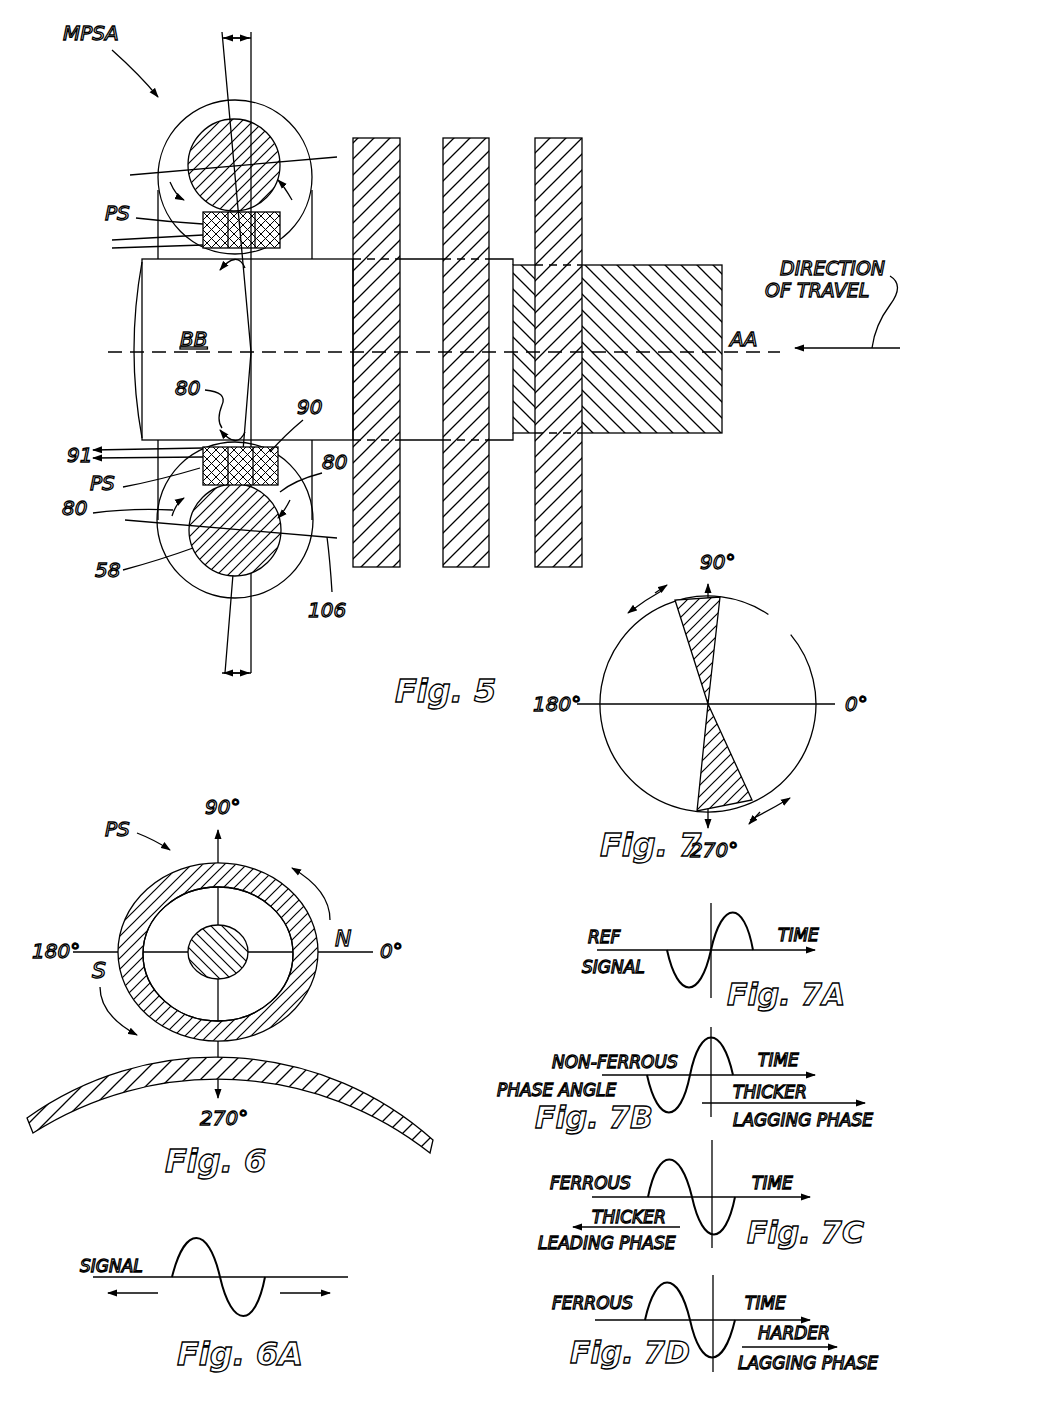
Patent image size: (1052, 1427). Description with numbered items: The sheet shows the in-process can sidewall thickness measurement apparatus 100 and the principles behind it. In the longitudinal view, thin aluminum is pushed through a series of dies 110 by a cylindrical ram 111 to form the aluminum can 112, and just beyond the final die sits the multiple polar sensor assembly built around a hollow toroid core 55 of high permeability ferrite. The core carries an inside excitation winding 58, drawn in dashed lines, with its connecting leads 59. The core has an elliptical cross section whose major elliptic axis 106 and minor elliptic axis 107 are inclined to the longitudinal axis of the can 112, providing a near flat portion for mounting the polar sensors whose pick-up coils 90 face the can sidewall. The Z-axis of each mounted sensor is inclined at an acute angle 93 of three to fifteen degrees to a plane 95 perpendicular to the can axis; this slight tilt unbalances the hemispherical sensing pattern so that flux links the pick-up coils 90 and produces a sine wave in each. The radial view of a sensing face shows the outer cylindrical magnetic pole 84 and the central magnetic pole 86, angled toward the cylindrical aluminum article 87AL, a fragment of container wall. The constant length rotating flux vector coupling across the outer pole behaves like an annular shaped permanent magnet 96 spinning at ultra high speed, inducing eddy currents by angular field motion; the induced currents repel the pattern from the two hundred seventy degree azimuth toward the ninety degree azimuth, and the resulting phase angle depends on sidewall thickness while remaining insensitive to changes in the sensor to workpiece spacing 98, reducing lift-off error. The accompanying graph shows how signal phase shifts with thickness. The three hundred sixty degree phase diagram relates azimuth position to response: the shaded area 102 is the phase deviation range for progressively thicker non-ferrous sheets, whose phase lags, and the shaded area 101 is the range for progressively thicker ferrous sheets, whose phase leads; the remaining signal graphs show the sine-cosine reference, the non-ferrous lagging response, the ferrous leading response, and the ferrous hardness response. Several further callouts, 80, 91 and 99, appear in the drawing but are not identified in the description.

In FIG. 5, the hollow toroid core 55 is at (285, 112).
In FIG. 5, the inside excitation winding 58 is at (192, 147).
In FIG. 5, the connecting leads 59 is at (227, 545).
In FIG. 5, the rotation direction arrows 80 is at (173, 190).
In FIG. 6, the outer cylindrical magnetic pole 84 is at (313, 982).
In FIG. 6, the central magnetic pole 86 is at (230, 927).
In FIG. 6, the cylindrical aluminum article 87AL is at (345, 1083).
In FIG. 5, the pick-up coil 90 is at (280, 232).
In FIG. 6, the pick-up coil 90 is at (187, 903).
In FIG. 5, the sensor leads 91 is at (203, 235).
In FIG. 5, the acute angle 93 is at (245, 35).
In FIG. 5, the plane perpendicular to the longitudinal axis 95 is at (253, 650).
In FIG. 6, the annular shaped permanent magnet 96 is at (325, 898).
In FIG. 6, the sensor to workpiece spacing 98 is at (220, 1047).
In FIG. 7, the phase circle 99 is at (782, 604).
In FIG. 5, the in-process can sidewall thickness measurement apparatus 100 is at (477, 90).
In FIG. 7, the shaded area for ferrous sheets 101 is at (727, 813).
In FIG. 7, the shaded area for non-ferrous sheets 102 is at (688, 597).
In FIG. 5, the major elliptic axis 106 is at (327, 157).
In FIG. 5, the minor elliptic axis 107 is at (223, 67).
In FIG. 5, the dies 110 is at (390, 567).
In FIG. 5, the cylindrical ram 111 is at (722, 400).
In FIG. 5, the aluminum can 112 is at (152, 382).